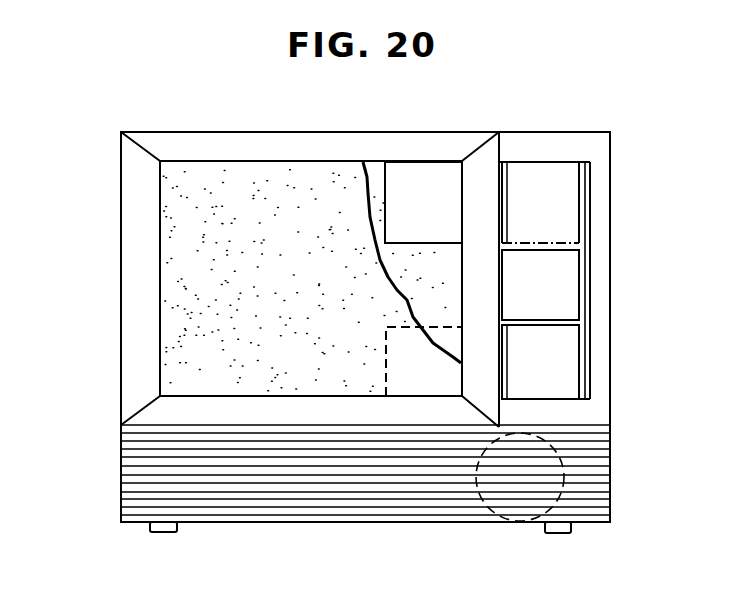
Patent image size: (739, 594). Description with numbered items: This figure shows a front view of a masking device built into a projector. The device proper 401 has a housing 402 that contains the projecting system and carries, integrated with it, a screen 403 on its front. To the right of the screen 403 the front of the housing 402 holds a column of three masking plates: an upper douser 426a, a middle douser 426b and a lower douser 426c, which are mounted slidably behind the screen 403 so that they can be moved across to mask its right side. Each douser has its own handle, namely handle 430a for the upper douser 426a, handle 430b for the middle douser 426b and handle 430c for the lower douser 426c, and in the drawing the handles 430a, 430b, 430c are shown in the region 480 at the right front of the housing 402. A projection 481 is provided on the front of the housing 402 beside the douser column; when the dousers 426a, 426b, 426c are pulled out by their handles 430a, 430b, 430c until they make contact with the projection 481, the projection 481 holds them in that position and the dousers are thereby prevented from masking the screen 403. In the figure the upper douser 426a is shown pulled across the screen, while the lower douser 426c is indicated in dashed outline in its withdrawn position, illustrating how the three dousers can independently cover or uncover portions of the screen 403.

The device proper 401 is at (300, 131).
The housing 402 is at (588, 132).
The screen 403 is at (162, 335).
The upper douser 426a is at (450, 117).
The middle douser 426b is at (570, 268).
The lower douser 426c is at (447, 330).
The handle of upper douser 430a is at (507, 203).
The handle of middle douser 430b is at (585, 297).
The handle of lower douser 430c is at (508, 366).
The control panel 480 is at (540, 165).
The projection 481 is at (593, 175).